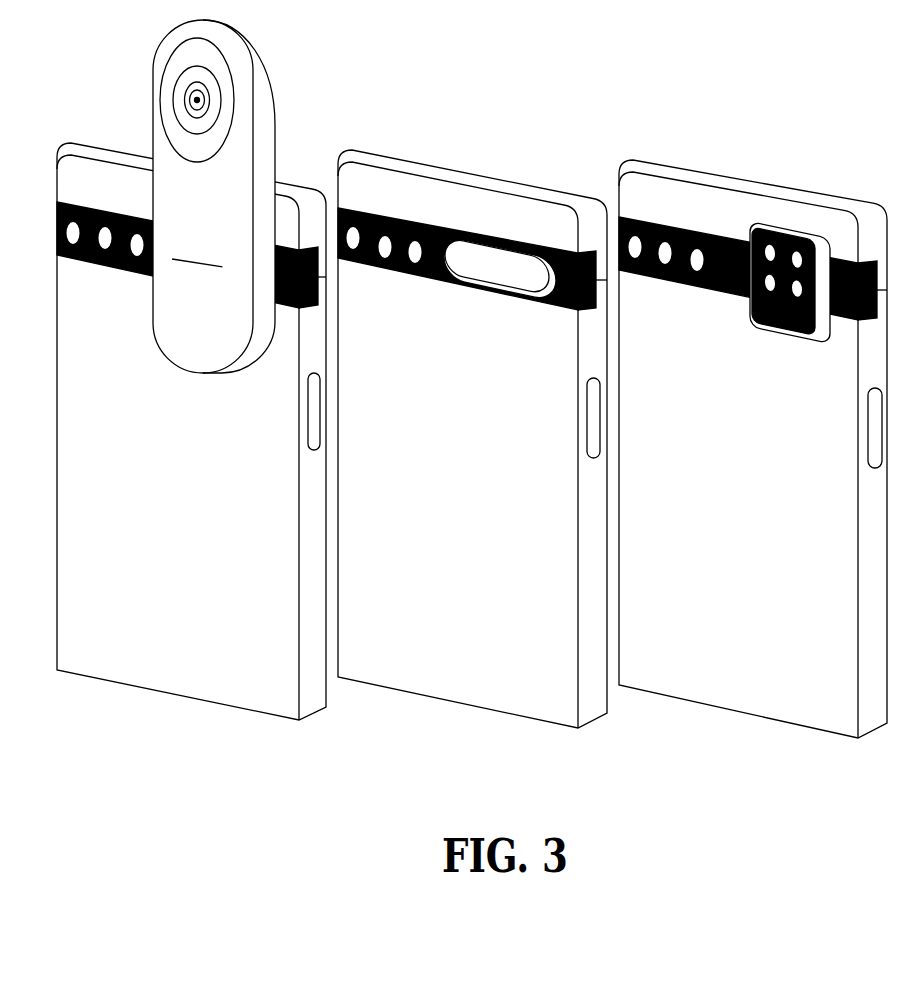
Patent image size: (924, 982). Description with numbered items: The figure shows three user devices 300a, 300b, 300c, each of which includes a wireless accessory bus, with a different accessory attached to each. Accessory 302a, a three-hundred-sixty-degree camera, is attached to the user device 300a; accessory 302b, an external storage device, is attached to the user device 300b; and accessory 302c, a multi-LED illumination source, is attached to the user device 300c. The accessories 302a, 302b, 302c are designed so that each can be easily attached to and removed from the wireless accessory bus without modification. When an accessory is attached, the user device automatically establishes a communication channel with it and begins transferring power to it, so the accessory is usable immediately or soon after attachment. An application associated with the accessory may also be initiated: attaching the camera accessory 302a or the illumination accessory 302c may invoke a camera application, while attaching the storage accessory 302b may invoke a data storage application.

The user device 300a is at (153, 472).
The user device 300b is at (442, 469).
The user device 300c is at (714, 469).
The accessory 302a is at (288, 133).
The accessory 302b is at (513, 230).
The accessory 302c is at (801, 213).